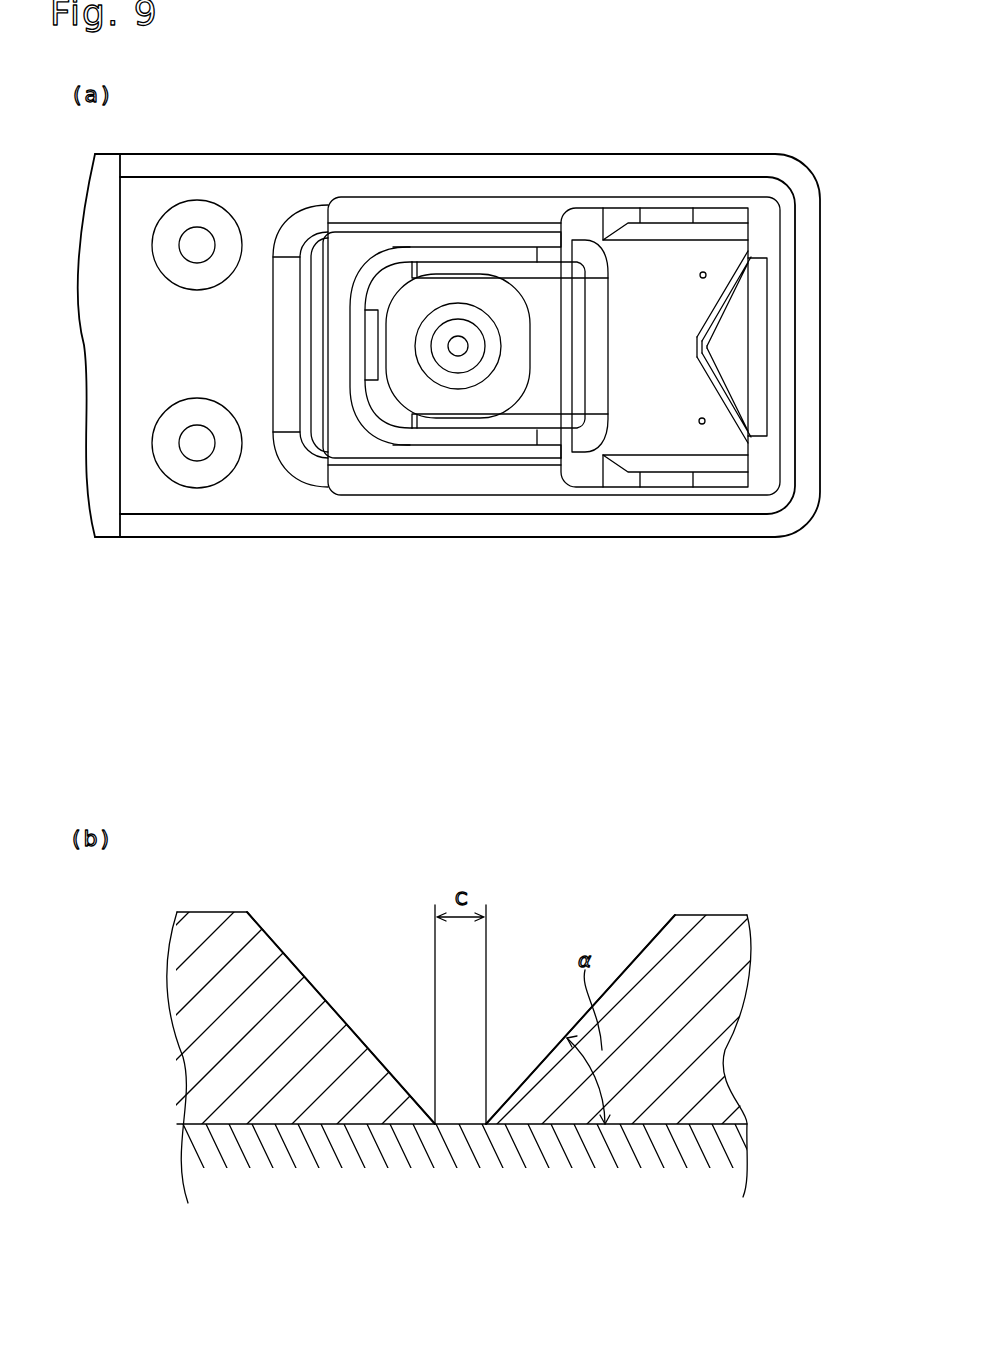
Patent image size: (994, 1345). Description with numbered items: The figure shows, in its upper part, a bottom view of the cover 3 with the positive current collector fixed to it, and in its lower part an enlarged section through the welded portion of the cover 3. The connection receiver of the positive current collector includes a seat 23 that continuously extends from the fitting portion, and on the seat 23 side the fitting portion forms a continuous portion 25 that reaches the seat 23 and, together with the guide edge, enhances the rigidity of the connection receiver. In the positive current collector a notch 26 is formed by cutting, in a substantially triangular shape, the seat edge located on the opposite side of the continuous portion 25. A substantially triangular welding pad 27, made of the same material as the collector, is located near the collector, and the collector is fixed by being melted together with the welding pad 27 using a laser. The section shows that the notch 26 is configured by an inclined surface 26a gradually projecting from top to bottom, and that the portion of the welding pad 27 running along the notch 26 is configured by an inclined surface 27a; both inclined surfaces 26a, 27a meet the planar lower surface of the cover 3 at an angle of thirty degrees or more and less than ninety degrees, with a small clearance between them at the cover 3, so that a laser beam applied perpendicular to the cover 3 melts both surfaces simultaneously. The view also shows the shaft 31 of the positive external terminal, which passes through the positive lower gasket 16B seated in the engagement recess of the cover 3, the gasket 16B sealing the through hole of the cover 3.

The cover 3 is at (470, 525).
The positive lower gasket 16B is at (583, 250).
The seat 23 is at (491, 730).
The continuous portion 25 is at (592, 430).
The notch 26 is at (722, 407).
The inclined surface 26a is at (317, 990).
The welding pad 27 is at (752, 378).
The inclined surface 27a is at (628, 965).
The shaft 31 is at (433, 313).